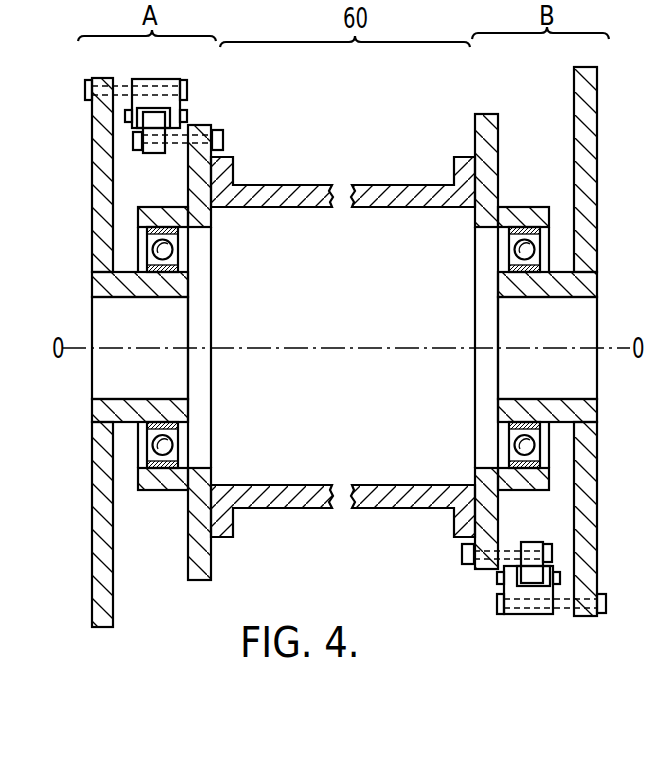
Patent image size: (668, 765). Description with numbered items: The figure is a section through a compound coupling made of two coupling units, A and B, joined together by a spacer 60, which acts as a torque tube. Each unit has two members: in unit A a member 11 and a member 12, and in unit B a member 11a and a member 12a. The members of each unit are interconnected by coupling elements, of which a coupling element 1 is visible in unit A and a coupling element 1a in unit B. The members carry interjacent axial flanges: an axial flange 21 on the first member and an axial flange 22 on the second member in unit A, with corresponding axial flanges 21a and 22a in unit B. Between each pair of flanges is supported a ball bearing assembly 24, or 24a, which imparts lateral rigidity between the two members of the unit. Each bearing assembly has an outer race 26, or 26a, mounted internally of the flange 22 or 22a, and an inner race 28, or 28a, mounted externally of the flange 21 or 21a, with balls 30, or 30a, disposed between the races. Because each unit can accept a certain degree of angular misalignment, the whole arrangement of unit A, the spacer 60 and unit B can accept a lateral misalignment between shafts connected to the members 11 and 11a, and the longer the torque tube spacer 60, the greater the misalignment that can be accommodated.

The coupling element 1 is at (198, 79).
The coupling element 1a is at (522, 628).
The member 11 is at (114, 610).
The member 11a is at (597, 517).
The member 12 is at (213, 578).
The member 12a is at (470, 572).
The axial flange 21 is at (184, 404).
The axial flange 21a is at (512, 398).
The axial flange 22 is at (139, 494).
The axial flange 22a is at (547, 207).
The ball bearing assembly 24 is at (190, 428).
The ball bearing assembly 24a is at (494, 430).
The outer race 26 is at (183, 234).
The outer race 26a is at (507, 233).
The inner race 28 is at (181, 267).
The inner race 28a is at (506, 267).
The balls 30 is at (170, 448).
The balls 30a is at (512, 440).
The spacer 60 is at (391, 184).